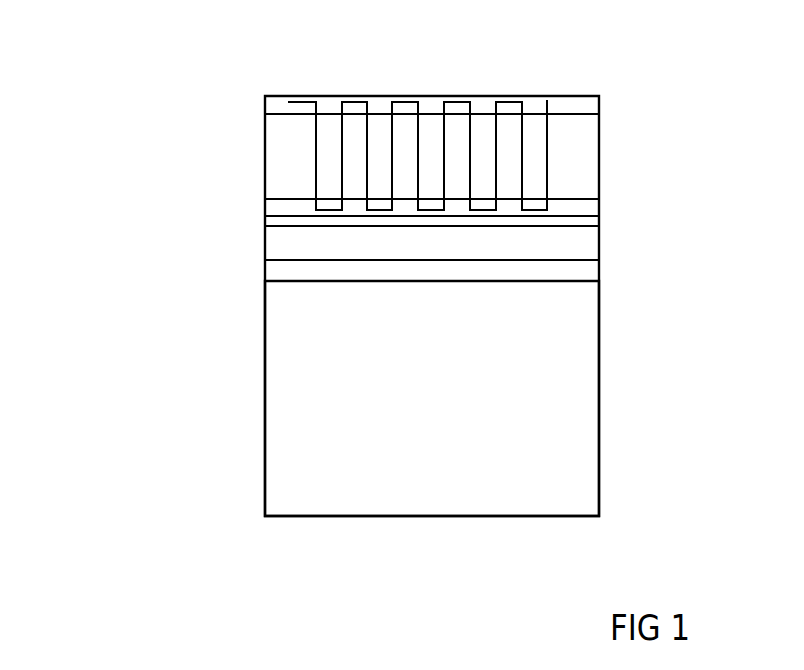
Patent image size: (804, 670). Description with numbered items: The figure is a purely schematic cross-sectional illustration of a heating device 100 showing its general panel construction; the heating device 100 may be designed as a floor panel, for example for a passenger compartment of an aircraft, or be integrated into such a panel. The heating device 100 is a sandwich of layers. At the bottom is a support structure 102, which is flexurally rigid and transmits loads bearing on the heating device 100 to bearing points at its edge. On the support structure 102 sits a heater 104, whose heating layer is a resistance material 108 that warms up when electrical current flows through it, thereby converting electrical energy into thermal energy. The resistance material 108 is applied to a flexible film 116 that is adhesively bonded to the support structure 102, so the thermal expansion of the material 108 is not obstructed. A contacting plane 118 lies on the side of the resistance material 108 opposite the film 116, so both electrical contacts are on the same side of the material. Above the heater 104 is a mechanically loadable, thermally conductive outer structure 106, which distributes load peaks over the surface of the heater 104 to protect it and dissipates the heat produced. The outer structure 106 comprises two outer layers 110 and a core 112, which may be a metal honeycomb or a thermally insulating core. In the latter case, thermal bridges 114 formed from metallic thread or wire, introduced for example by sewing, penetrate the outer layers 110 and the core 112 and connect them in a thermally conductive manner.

The heating device 100 is at (225, 80).
The support structure 102 is at (266, 342).
The heater 104 is at (130, 208).
The outer structure 106 is at (128, 95).
The resistance material 108 is at (265, 248).
The outer layers 110 is at (599, 106).
The core 112 is at (599, 153).
The thermal bridges 114 is at (462, 100).
The flexible film 116 is at (265, 278).
The contacting plane 118 is at (265, 219).